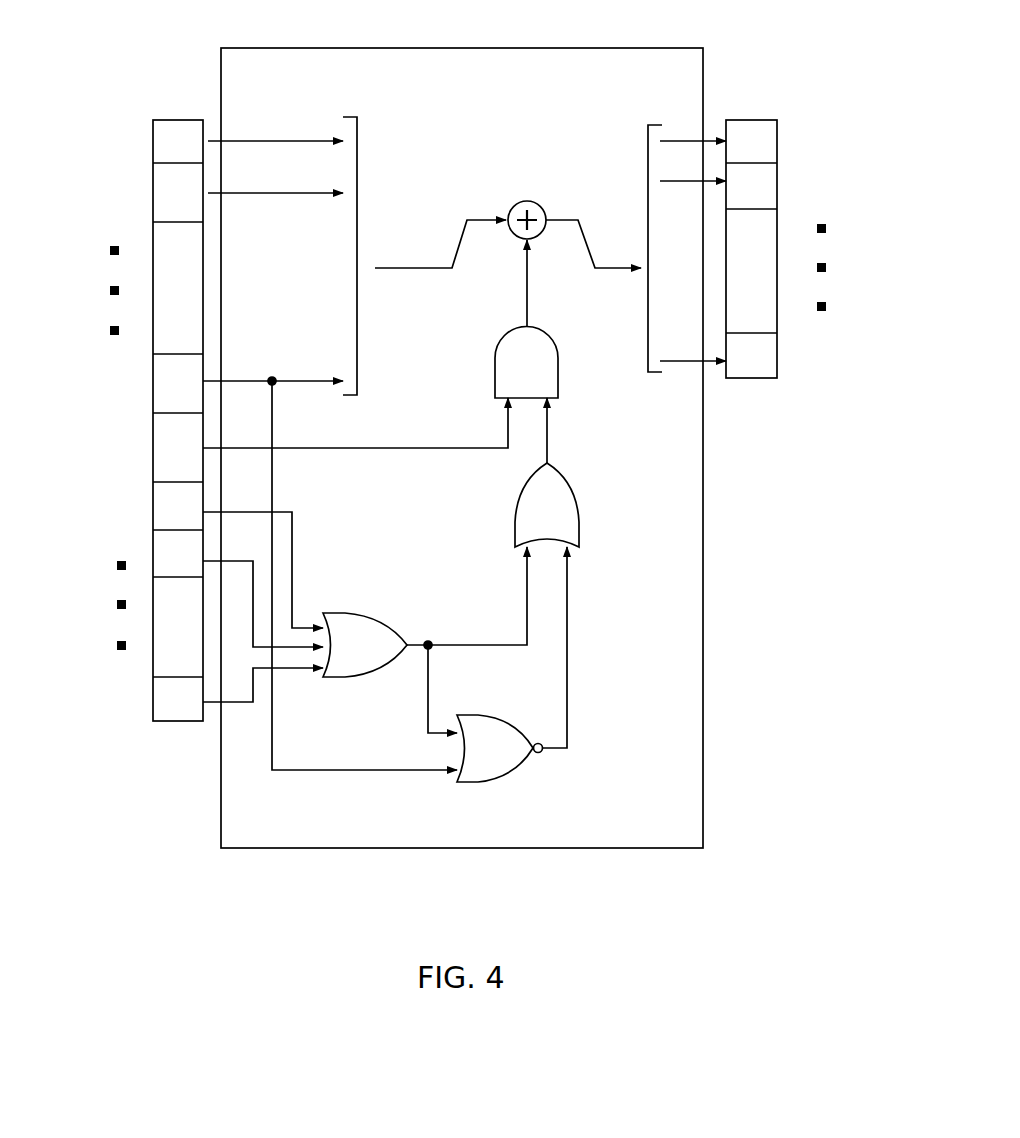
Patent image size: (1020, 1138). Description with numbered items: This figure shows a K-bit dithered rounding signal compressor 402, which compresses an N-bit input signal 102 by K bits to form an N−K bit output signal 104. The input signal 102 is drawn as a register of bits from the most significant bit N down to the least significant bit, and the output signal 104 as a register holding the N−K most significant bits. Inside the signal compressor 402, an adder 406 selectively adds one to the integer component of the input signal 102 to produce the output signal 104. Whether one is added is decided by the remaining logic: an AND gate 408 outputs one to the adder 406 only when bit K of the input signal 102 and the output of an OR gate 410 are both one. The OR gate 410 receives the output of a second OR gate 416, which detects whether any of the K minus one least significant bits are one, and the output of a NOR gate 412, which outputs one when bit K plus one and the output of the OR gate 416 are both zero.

The N-bit input signal 102 is at (178, 119).
The N−K bit output signal 104 is at (749, 119).
The K-bit dithered rounding signal compressor 402 is at (398, 48).
The adder 406 is at (527, 201).
The AND gate 408 is at (549, 336).
The OR gate 410 is at (572, 491).
The NOR gate 412 is at (488, 715).
The OR gate 416 is at (349, 612).